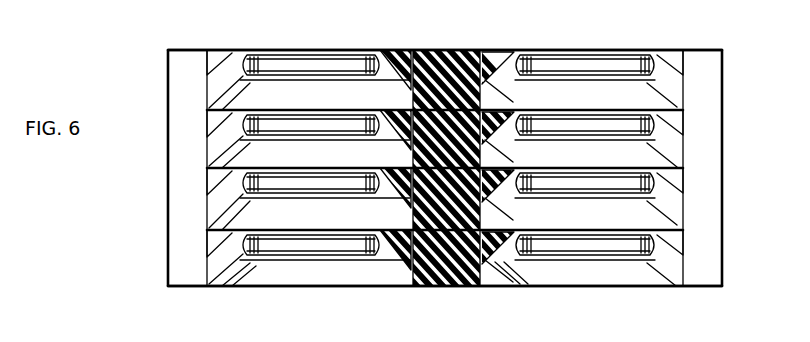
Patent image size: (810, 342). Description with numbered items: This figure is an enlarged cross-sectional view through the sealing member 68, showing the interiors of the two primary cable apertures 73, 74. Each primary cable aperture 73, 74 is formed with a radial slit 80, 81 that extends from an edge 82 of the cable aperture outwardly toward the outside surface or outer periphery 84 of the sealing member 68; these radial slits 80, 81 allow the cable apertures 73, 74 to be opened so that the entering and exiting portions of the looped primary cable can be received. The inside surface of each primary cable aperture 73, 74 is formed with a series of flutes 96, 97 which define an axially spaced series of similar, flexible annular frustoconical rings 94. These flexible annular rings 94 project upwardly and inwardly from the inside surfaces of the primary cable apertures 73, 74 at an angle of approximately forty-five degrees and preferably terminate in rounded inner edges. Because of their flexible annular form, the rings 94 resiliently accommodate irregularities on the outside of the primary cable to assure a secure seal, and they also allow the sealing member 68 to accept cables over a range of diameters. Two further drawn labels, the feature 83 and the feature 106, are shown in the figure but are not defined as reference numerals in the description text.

The connector block 68 is at (160, 205).
The first contact row 73 is at (269, 174).
The second contact row 74 is at (584, 193).
The first side wall 80 is at (190, 177).
The second side wall 81 is at (722, 206).
The first base portion 82 is at (263, 272).
The second base portion 83 is at (530, 270).
The bottom wall 84 is at (167, 258).
The contact 94 is at (235, 57).
The retention notch 96 is at (207, 117).
The contact passage 97 is at (522, 91).
The top wall 106 is at (178, 48).